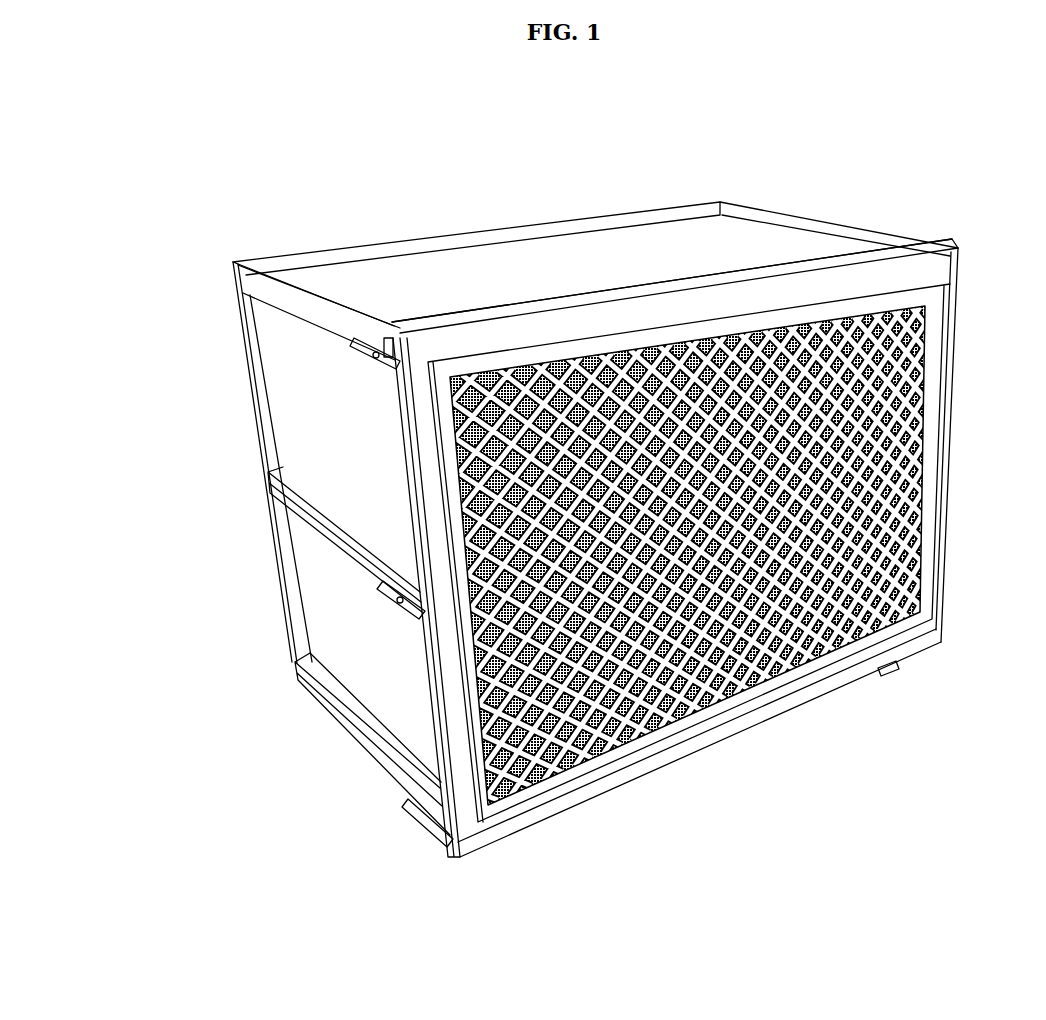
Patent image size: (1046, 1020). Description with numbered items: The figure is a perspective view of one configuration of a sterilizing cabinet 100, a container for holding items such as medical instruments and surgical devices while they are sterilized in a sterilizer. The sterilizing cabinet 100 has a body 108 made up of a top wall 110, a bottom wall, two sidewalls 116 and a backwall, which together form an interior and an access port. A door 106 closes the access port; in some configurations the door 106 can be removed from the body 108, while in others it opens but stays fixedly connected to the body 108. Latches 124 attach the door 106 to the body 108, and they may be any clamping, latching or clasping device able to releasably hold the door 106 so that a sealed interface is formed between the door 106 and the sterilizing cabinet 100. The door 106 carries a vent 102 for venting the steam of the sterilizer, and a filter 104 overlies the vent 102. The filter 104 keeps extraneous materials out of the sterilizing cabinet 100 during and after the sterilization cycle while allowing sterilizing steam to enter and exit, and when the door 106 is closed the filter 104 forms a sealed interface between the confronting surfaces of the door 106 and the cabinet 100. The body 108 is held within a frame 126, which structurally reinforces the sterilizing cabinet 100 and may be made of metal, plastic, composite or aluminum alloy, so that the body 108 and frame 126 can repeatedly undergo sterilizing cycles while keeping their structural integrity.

The sterilizing cabinet 100 is at (192, 460).
The vent 102 is at (590, 728).
The filter 104 is at (747, 540).
The door 106 is at (763, 722).
The body 108 is at (372, 668).
The top wall 110 is at (443, 287).
The sidewalls 116 is at (288, 396).
The latches 124 is at (370, 372).
The frame 126 is at (288, 694).